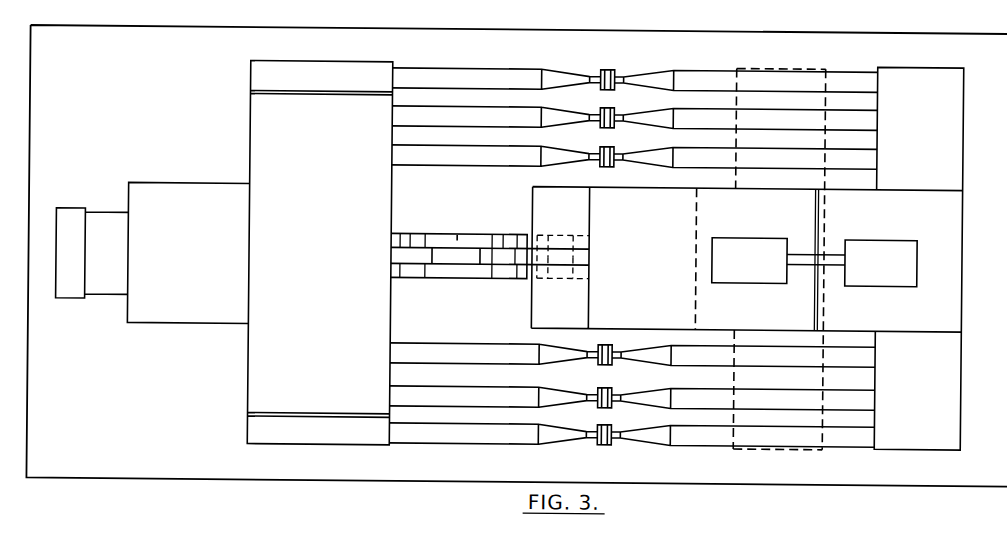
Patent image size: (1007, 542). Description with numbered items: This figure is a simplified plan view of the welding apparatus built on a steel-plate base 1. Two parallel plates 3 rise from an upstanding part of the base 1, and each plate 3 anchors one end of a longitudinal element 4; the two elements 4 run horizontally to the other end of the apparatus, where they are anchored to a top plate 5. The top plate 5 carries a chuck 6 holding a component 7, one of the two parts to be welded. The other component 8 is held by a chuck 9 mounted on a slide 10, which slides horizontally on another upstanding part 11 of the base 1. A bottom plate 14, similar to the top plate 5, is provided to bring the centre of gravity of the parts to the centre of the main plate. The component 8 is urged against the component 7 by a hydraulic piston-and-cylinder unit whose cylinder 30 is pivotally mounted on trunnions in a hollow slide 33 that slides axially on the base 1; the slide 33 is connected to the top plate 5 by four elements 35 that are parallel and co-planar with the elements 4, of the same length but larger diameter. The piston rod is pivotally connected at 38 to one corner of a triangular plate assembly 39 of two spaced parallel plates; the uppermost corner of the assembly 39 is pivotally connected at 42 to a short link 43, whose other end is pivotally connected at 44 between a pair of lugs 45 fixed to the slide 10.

The base 1 is at (565, 473).
The parallel plates 3 is at (317, 80).
The longitudinal elements 4 is at (633, 255).
The top plate 5 is at (925, 219).
The chuck 6 is at (873, 270).
The component 7 is at (835, 255).
The component 8 is at (800, 255).
The chuck 9 is at (738, 271).
The slide 10 is at (617, 223).
The upstanding part 11 is at (540, 317).
The bottom plate 14 is at (757, 66).
The cylinder 30 is at (103, 232).
The hollow slide 33 is at (195, 201).
The elements 35 is at (455, 113).
The pivotal connection 38 is at (412, 238).
The triangular plate assembly 39 is at (457, 243).
The pivotal connection 42 is at (502, 235).
The short link 43 is at (528, 257).
The pivotal connection 44 is at (558, 242).
The lugs 45 is at (553, 272).